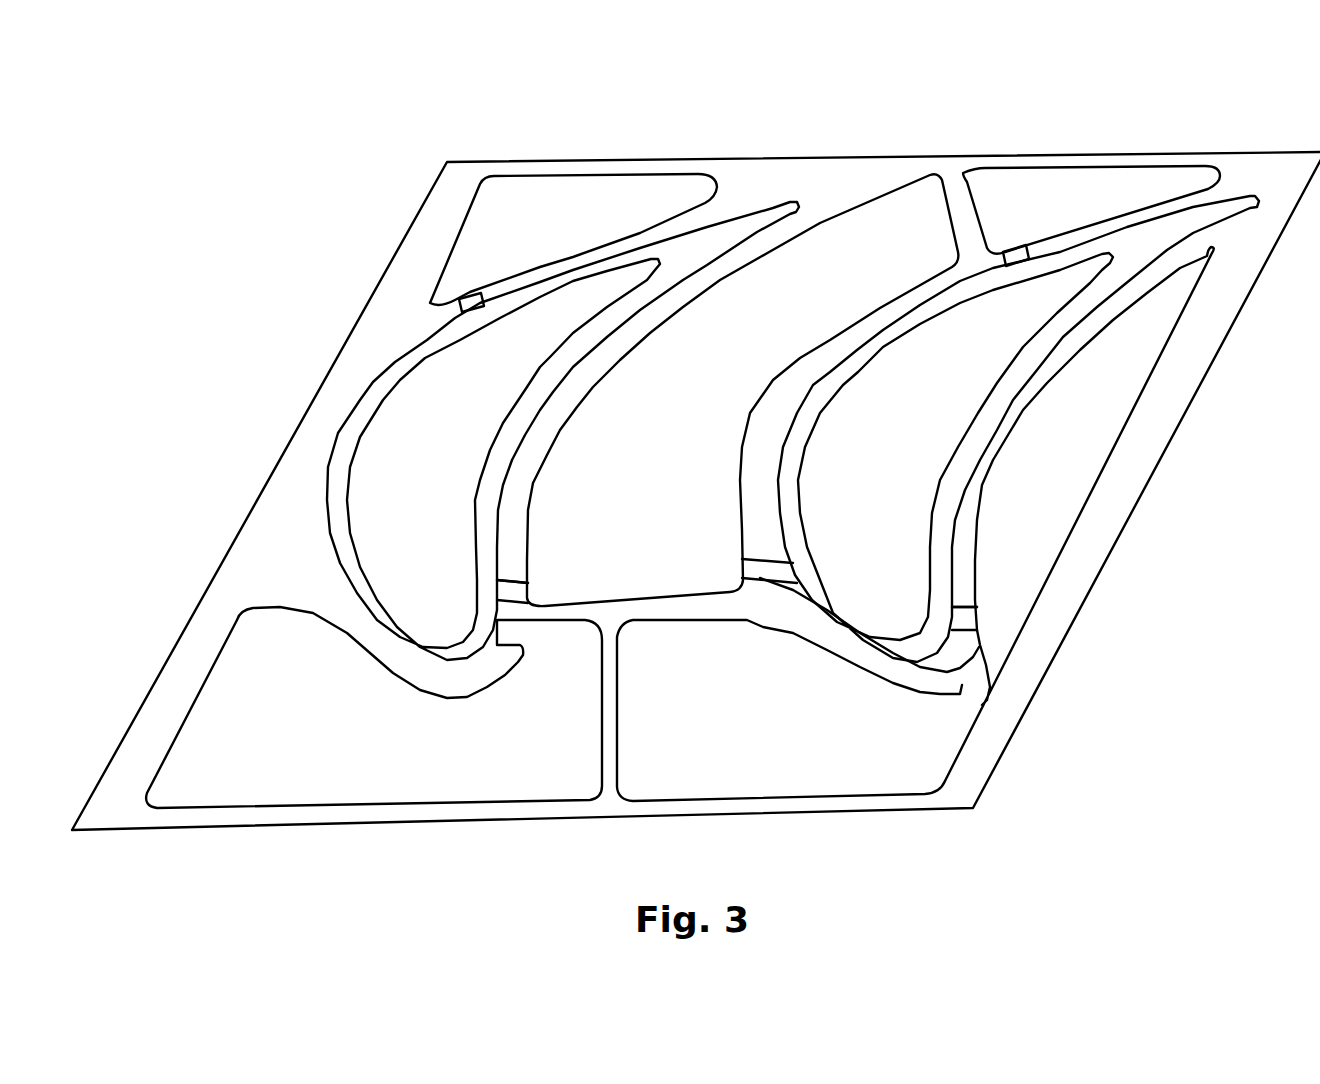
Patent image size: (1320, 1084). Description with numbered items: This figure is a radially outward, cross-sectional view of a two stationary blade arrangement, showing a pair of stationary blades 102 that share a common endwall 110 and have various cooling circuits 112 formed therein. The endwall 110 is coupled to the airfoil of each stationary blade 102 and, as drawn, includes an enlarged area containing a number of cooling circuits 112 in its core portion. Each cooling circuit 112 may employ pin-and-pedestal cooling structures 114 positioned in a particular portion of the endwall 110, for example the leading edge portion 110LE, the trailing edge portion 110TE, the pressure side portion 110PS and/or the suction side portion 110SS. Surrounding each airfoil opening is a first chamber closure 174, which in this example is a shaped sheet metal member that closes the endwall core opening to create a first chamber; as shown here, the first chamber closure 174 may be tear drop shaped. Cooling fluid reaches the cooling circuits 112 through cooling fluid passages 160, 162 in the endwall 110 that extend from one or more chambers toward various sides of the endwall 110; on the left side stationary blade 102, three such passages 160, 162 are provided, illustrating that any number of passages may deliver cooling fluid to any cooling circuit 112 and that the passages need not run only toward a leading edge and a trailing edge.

The endwall 110 is at (696, 453).
The stationary blade 102 is at (793, 382).
The cooling circuit 112 is at (678, 517).
The pin-and-pedestal cooling structure 114 is at (679, 545).
The first chamber closure 174 is at (740, 421).
The first cooling fluid passage 160 is at (765, 485).
The second cooling fluid passage 162 is at (737, 593).
The trailing edge portion 110TE is at (801, 141).
The leading edge portion 110LE is at (697, 779).
The suction side portion 110SS is at (535, 474).
The pressure side portion 110PS is at (686, 475).